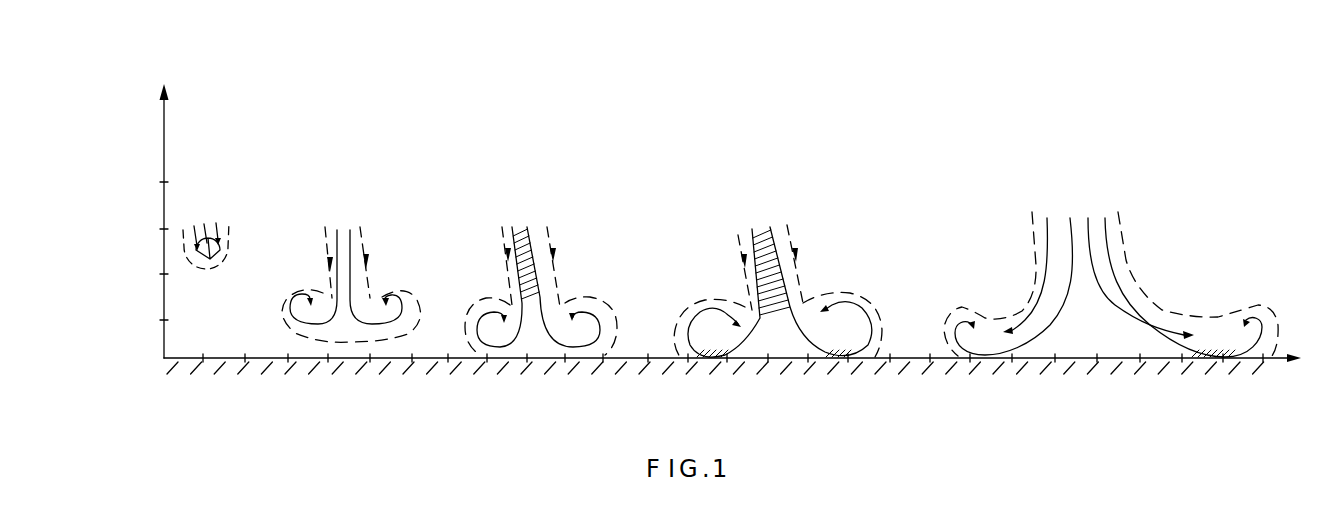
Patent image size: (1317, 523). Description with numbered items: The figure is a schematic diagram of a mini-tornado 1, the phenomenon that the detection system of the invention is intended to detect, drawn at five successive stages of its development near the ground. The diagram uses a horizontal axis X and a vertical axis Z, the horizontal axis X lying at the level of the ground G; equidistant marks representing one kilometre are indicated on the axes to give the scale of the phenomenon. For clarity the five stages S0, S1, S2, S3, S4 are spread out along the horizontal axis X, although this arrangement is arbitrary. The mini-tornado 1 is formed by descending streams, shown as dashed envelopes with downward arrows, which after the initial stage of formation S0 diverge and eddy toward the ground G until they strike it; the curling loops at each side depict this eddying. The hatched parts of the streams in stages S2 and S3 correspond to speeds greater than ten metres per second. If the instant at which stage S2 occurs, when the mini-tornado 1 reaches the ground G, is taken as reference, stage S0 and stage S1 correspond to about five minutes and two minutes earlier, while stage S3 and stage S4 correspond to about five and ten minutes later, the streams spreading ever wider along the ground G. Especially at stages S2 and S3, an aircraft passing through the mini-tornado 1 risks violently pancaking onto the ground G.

The mini-tornado 1 is at (730, 252).
The initial stage of formation S0 is at (206, 208).
The second development stage S1 is at (383, 265).
The ground-contact stage S2 is at (568, 271).
The fourth development stage S3 is at (811, 269).
The fifth development stage S4 is at (1165, 245).
The ground G is at (913, 352).
The vertical axis Z is at (157, 207).
The horizontal axis X is at (732, 376).